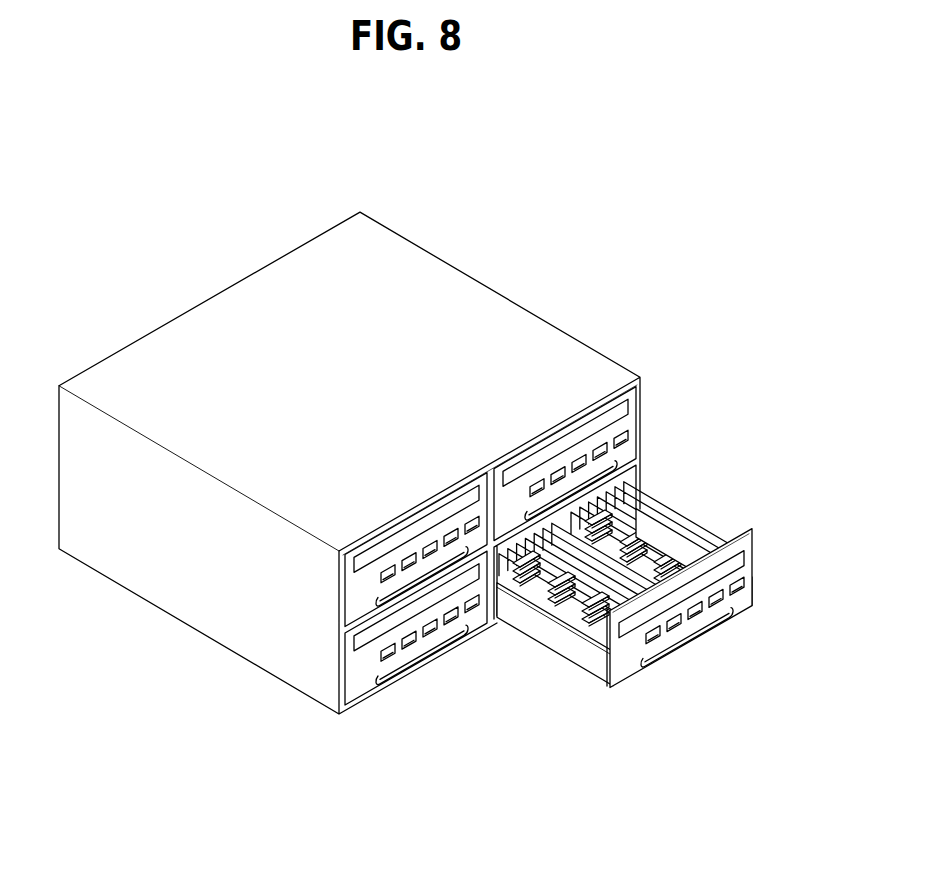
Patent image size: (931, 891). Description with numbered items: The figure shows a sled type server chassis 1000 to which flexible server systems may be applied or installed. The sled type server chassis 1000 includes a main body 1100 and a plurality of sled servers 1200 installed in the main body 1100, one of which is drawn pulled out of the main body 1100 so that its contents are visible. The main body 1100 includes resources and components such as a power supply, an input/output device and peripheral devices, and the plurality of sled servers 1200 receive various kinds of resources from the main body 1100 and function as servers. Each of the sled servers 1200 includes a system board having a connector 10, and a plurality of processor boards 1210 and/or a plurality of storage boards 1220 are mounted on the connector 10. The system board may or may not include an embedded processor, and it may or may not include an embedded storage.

The sled type server chassis 1000 is at (487, 104).
The main body 1100 is at (527, 311).
The sled servers 1200 is at (618, 585).
The processor boards 1210 is at (577, 613).
The storage boards 1220 is at (623, 537).
The connector 10 is at (540, 607).